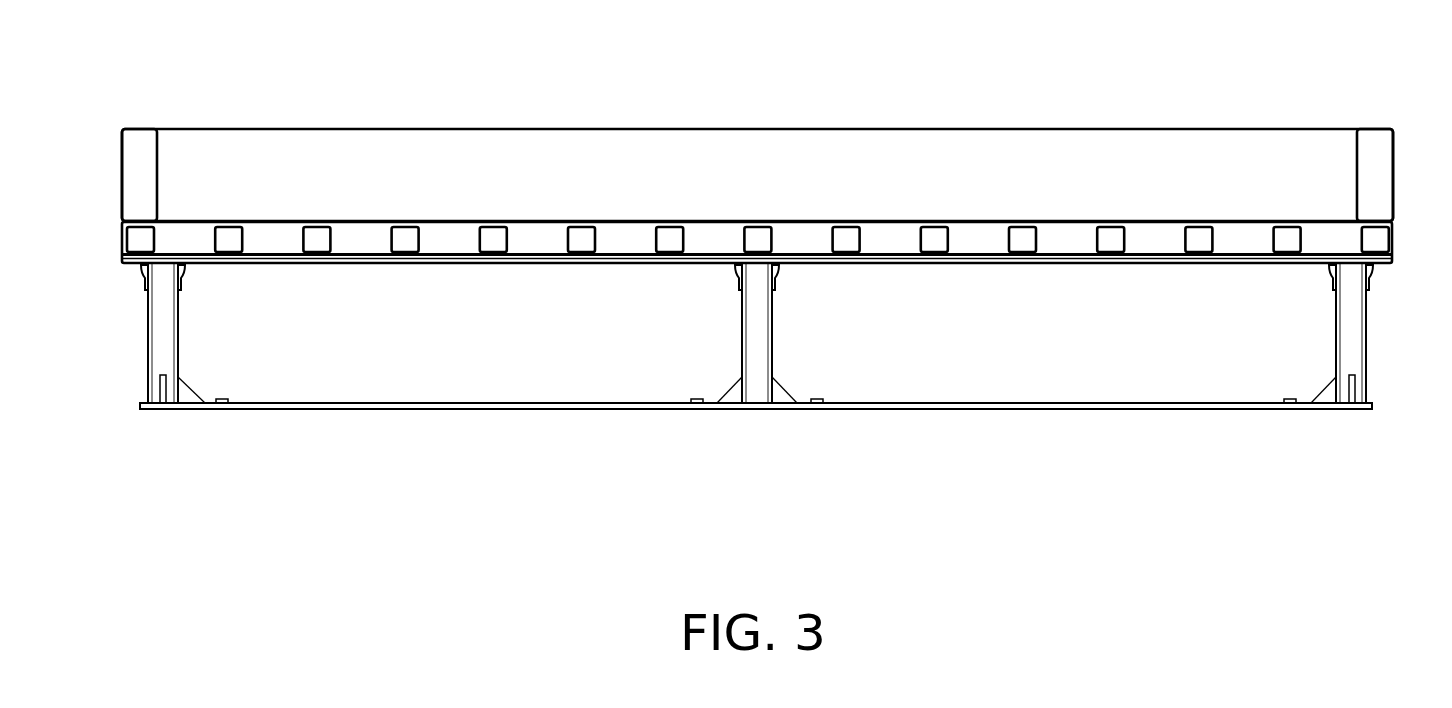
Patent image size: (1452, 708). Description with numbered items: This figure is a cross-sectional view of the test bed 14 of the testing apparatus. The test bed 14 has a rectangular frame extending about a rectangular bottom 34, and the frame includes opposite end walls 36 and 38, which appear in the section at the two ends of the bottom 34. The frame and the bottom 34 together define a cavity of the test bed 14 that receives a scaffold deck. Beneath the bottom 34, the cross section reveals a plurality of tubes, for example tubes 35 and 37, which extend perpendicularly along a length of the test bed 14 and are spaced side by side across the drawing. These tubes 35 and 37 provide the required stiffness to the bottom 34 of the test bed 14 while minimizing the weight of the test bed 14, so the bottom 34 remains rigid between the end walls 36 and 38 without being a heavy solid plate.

The test bed 14 is at (135, 112).
The rectangular bottom 34 is at (1165, 220).
The tube 35 is at (228, 233).
The end wall 36 is at (1393, 163).
The tube 37 is at (313, 233).
The end wall 38 is at (122, 173).